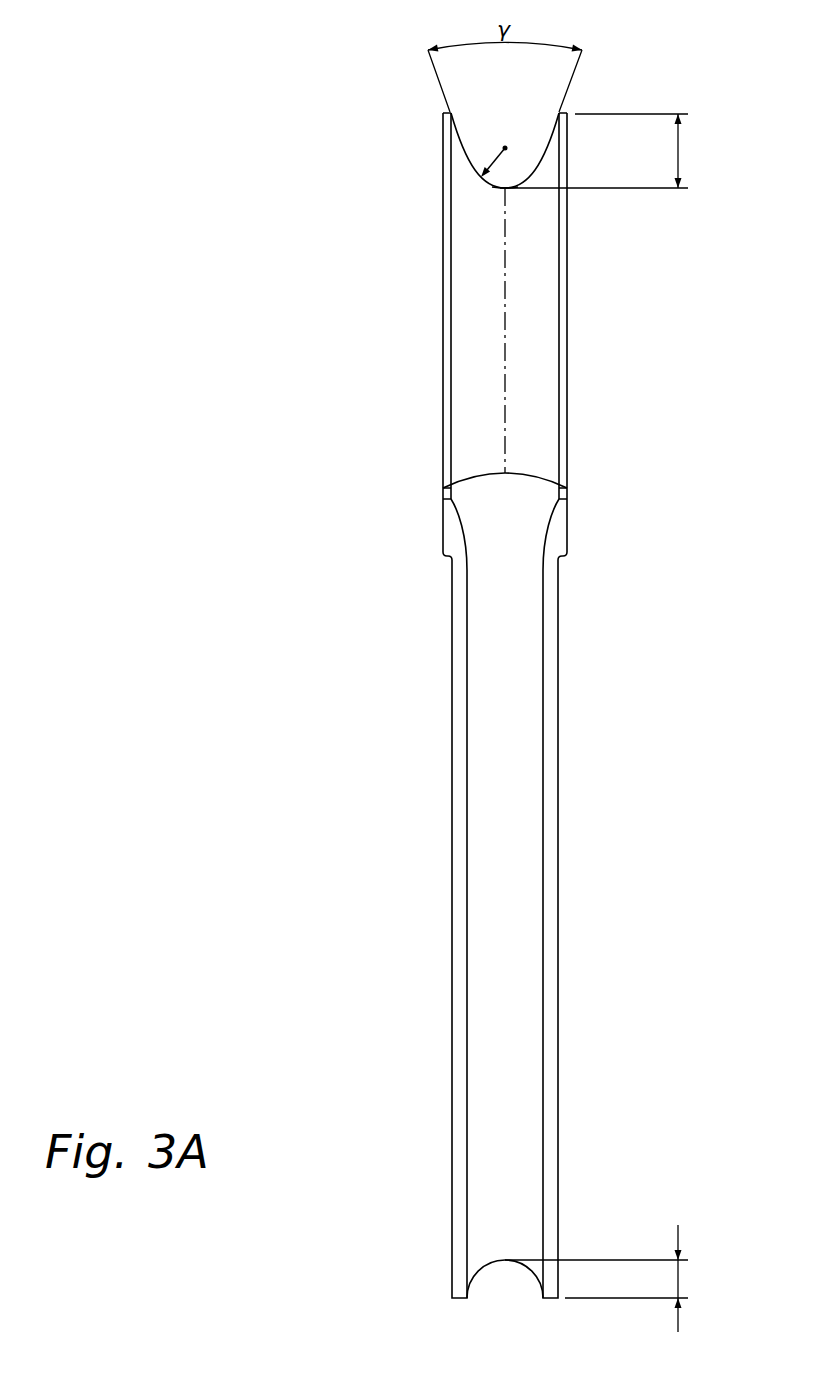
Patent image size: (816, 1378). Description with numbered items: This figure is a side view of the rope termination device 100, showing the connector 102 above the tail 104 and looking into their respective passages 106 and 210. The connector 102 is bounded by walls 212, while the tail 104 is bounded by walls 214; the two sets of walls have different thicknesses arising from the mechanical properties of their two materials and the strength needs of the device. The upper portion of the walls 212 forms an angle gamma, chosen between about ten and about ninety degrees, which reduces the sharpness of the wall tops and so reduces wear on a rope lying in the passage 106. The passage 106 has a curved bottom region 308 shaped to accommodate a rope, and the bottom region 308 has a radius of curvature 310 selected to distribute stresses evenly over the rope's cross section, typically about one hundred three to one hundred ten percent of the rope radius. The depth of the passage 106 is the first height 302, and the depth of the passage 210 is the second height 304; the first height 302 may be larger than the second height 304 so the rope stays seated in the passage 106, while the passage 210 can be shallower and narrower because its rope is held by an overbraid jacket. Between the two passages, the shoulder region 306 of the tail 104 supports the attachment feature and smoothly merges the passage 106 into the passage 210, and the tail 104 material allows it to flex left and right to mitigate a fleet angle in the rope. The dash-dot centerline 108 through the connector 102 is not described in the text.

The rope termination device 100 is at (278, 343).
The connector 102 is at (443, 188).
The tail 104 is at (452, 1115).
The passage 106 is at (516, 114).
The longitudinal axis 108 is at (505, 378).
The passage 210 is at (504, 1290).
The walls 212 is at (567, 337).
The walls 214 is at (557, 874).
The first height 302 is at (678, 150).
The second height 304 is at (678, 1278).
The shoulder region 306 is at (567, 534).
The bottom region 308 is at (505, 188).
The radius of curvature 310 is at (492, 158).